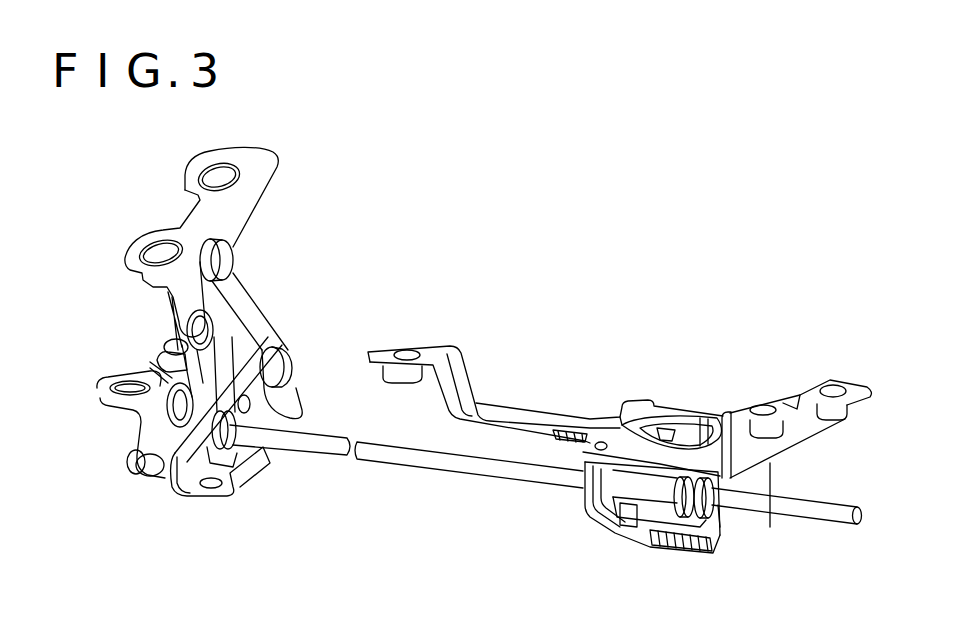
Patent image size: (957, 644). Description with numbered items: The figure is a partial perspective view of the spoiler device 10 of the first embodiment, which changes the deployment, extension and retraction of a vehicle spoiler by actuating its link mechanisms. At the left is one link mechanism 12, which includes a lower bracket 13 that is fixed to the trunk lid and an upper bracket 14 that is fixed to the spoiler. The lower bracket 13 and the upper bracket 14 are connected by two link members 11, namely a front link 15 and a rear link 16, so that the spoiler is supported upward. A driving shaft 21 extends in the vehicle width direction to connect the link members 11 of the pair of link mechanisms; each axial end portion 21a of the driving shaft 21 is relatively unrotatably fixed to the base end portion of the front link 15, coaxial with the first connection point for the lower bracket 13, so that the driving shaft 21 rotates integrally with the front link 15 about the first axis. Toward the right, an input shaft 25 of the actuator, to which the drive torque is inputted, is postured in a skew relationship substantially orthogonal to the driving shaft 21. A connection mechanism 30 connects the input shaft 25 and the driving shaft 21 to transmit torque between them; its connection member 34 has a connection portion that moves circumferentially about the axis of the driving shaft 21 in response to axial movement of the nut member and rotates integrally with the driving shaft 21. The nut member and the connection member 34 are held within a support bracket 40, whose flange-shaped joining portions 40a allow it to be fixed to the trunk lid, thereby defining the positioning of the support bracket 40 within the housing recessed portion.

The spoiler device 10 is at (766, 277).
The link members 11 is at (198, 358).
The link mechanism 12 is at (244, 510).
The lower bracket 13 is at (172, 494).
The upper bracket 14 is at (268, 186).
The front link 15 is at (158, 360).
The rear link 16 is at (240, 264).
The driving shaft 21 is at (423, 468).
The axial end portion 21a is at (246, 460).
The input shaft 25 is at (690, 558).
The connection mechanism 30 is at (596, 543).
The connection member 34 is at (653, 497).
The support bracket 40 is at (620, 448).
The joining portion 40a is at (412, 347).